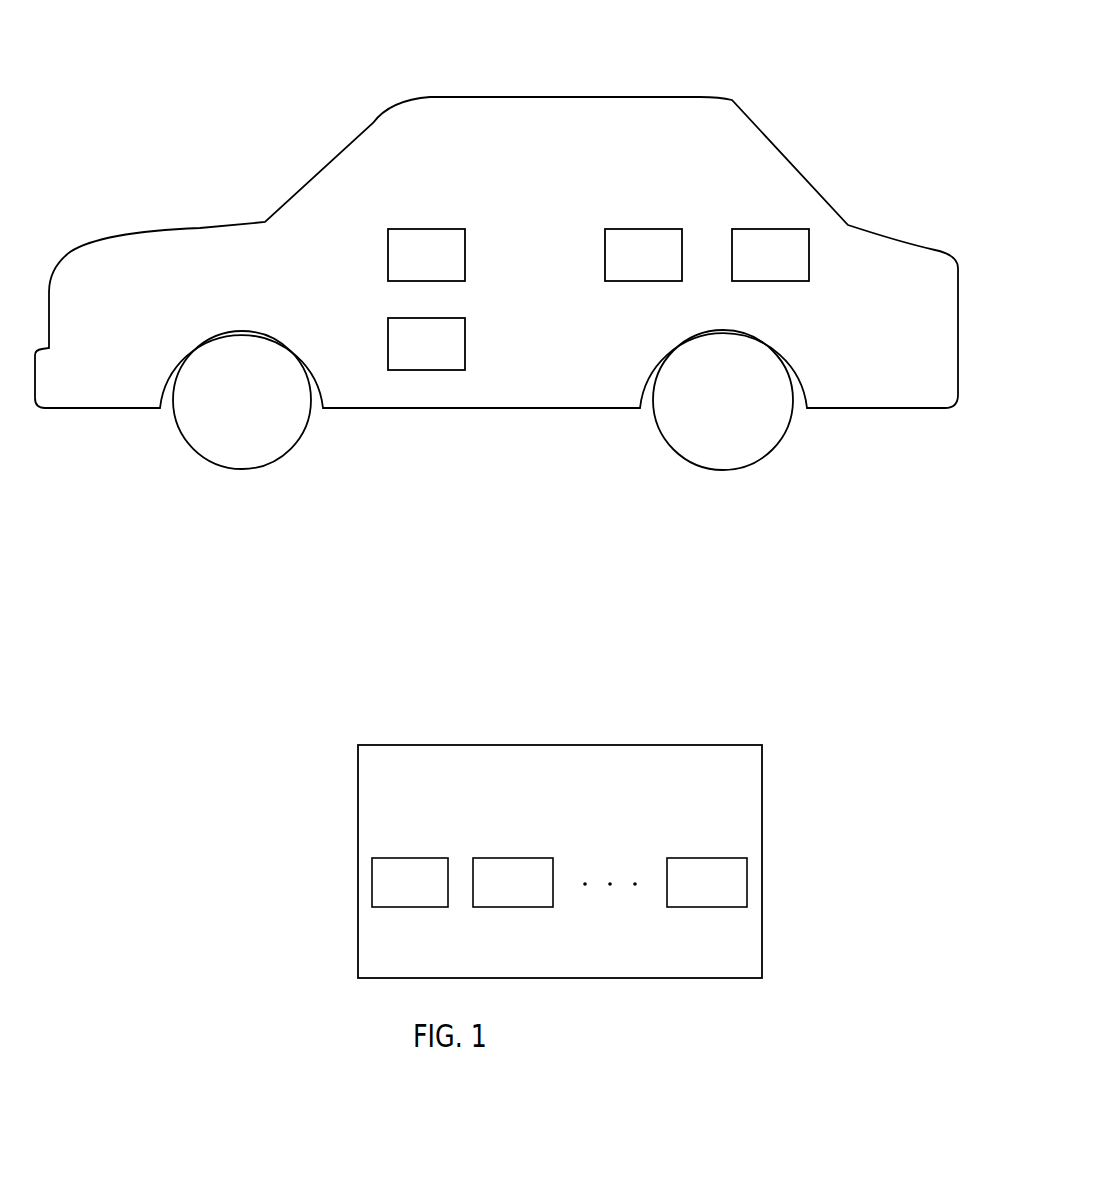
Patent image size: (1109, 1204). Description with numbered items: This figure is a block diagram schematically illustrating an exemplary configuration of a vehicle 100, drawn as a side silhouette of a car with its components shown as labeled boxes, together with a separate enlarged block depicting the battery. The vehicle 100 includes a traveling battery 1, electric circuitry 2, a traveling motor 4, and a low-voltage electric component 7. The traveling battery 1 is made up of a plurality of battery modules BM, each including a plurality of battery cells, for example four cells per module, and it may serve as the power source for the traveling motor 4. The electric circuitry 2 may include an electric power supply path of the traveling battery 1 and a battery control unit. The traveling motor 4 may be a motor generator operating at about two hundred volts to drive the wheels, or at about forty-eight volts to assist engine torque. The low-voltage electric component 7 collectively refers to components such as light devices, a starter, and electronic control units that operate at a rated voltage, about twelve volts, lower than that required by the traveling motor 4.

The vehicle 100 is at (732, 100).
The traveling battery 1 is at (560, 603).
The electric circuitry 2 is at (426, 255).
The traveling motor 4 is at (770, 255).
The low-voltage electric component 7 is at (426, 344).